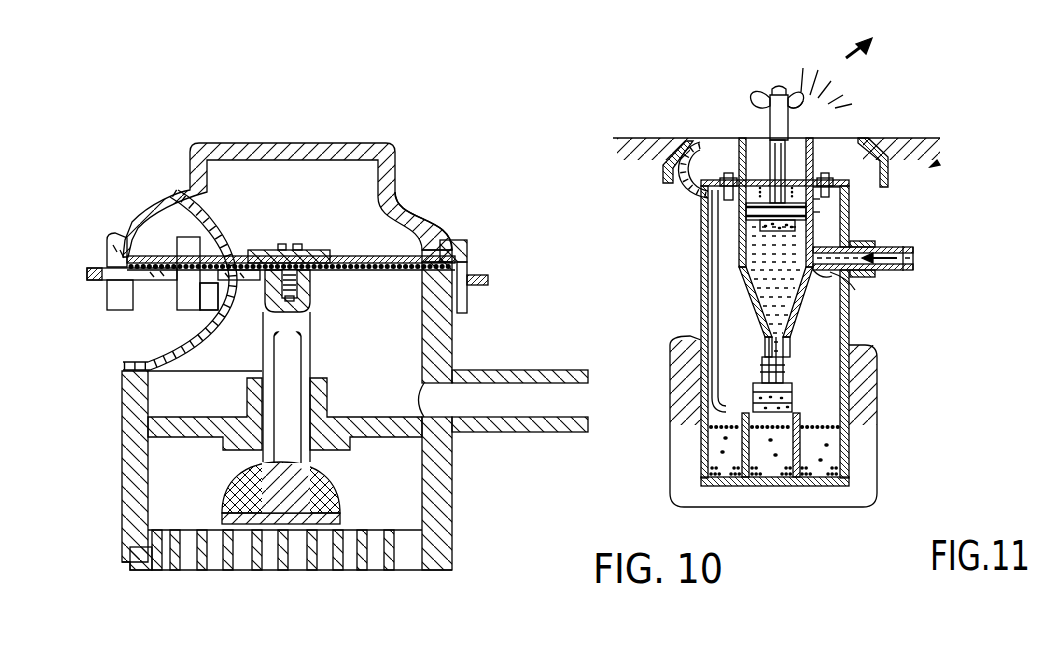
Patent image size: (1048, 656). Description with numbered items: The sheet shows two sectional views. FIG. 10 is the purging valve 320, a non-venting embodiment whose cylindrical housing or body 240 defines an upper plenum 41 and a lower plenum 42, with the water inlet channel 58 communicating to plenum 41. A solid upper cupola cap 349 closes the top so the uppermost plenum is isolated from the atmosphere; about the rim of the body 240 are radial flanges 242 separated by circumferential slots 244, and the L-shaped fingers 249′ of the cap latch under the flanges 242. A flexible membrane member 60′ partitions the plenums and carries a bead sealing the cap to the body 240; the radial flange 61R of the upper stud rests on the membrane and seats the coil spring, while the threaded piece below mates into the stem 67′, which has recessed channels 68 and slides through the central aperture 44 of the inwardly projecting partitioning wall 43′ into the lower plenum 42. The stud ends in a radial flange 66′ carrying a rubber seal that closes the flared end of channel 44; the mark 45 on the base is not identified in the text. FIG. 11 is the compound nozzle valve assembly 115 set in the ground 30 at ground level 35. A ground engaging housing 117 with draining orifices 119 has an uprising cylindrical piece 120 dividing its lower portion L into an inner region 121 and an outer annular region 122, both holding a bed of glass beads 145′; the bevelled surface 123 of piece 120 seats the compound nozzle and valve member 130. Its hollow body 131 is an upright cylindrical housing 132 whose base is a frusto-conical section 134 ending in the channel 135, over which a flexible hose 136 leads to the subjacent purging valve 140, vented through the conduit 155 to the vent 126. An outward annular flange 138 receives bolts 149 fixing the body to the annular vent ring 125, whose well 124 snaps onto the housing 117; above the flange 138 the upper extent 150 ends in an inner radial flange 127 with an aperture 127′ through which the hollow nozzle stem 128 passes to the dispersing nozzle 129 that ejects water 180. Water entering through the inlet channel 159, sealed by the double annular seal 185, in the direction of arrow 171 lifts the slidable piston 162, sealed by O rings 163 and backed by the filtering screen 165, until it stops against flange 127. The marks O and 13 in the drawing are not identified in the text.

In FIG. 10, the flexible membrane member 60′ is at (400, 261).
In FIG. 10, the upper cupola cap 349 is at (440, 217).
In FIG. 10, the L-shaped finger 249′ is at (181, 288).
In FIG. 10, the circumferential slot 244 is at (115, 231).
In FIG. 10, the radial flange 242 is at (92, 267).
In FIG. 10, the radially projecting flange 61R is at (326, 252).
In FIG. 10, the plenum 41 is at (249, 351).
In FIG. 10, the recessed channels 68 is at (268, 366).
In FIG. 10, the central aperture 44 is at (311, 393).
In FIG. 10, the lower stud or stem 67′ is at (284, 389).
In FIG. 10, the lower plenum 42 is at (190, 472).
In FIG. 10, the radial flange 66′ is at (221, 515).
In FIG. 10, the partitioning wall 43′ is at (390, 436).
In FIG. 10, the cylindrical housing or body 240 is at (456, 502).
In FIG. 10, the water inlet orifice or channel 58 is at (537, 428).
In FIG. 10, the purging valve 320 is at (452, 543).
In FIG. 10, the perforated base 45 is at (218, 558).
In FIG. 11, the ground level 35 is at (616, 136).
In FIG. 11, the annular flange 138 is at (942, 148).
In FIG. 11, the compound nozzle valve assembly 115 is at (932, 166).
In FIG. 11, the annular vent ring 125 is at (663, 178).
In FIG. 11, the atmospheric communicating vent 126 is at (690, 146).
In FIG. 11, the venting conduit 155 is at (712, 308).
In FIG. 11, the uprising cylindrical piece 120 is at (817, 323).
In FIG. 11, the compound nozzle and valve member 130 is at (739, 262).
In FIG. 11, the frusto-conical section 134 is at (750, 290).
In FIG. 11, the O rings 163 is at (746, 199).
In FIG. 11, the water filtering screen network 165 is at (762, 230).
In FIG. 11, the water dispersing nozzle 129 is at (773, 84).
In FIG. 11, the hollow nozzle stem 128 is at (771, 163).
In FIG. 11, the upper extent of cylindrical housing 150 is at (739, 173).
In FIG. 11, the inwardly projecting radial flange 127 is at (822, 183).
In FIG. 11, the central aperture 127′ is at (808, 132).
In FIG. 11, the ejected water 180 is at (853, 45).
In FIG. 11, the threaded bolts 149 is at (855, 135).
In FIG. 11, the well 124 is at (860, 138).
In FIG. 11, the hollow body 131 is at (820, 205).
In FIG. 11, the slidable piston 162 is at (816, 213).
In FIG. 11, the outlet pipe 13 is at (918, 249).
In FIG. 11, the upright cylindrical housing 132 is at (860, 242).
In FIG. 11, the water flow arrow 171 is at (916, 268).
In FIG. 11, the water inlet channel 159 is at (885, 276).
In FIG. 11, the double annular seal 185 is at (855, 276).
In FIG. 11, the bevelled surface 123 is at (822, 304).
In FIG. 11, the water conveying channel 135 is at (760, 358).
In FIG. 11, the flexible hose 136 is at (794, 352).
In FIG. 11, the inner cylindrical region 121 is at (882, 367).
In FIG. 11, the outer annular region 122 is at (880, 385).
In FIG. 11, the water purging valve 140 is at (874, 411).
In FIG. 11, the lower portion of assembly L is at (877, 427).
In FIG. 11, the ground engaging housing 117 is at (848, 442).
In FIG. 11, the water porous and earth filtering media 145′ is at (718, 450).
In FIG. 11, the water draining orifices 119 is at (848, 517).
In FIG. 11, the surrounding ground 30 is at (654, 500).
In FIG. 11, the opening O is at (737, 163).